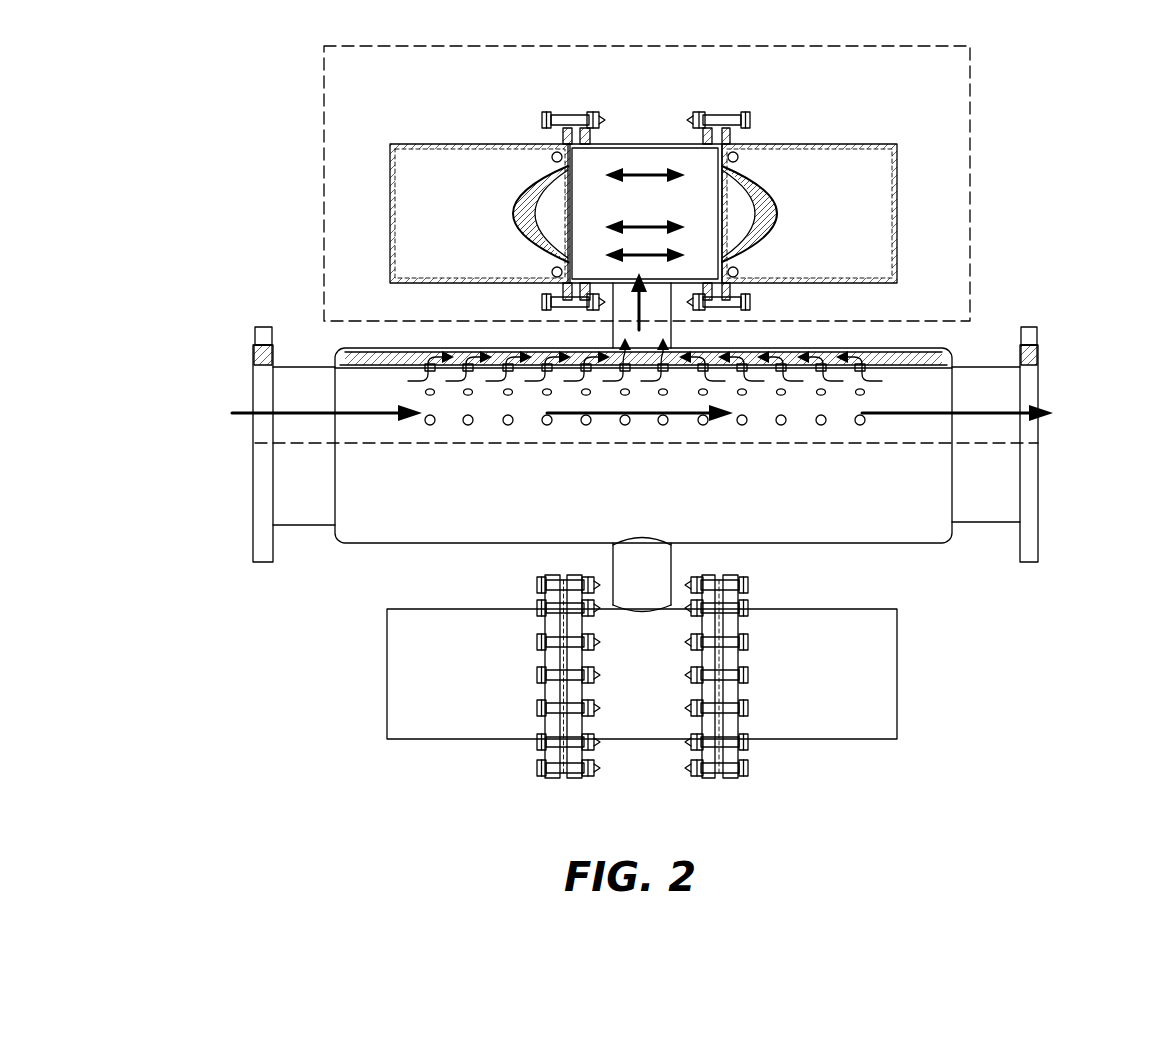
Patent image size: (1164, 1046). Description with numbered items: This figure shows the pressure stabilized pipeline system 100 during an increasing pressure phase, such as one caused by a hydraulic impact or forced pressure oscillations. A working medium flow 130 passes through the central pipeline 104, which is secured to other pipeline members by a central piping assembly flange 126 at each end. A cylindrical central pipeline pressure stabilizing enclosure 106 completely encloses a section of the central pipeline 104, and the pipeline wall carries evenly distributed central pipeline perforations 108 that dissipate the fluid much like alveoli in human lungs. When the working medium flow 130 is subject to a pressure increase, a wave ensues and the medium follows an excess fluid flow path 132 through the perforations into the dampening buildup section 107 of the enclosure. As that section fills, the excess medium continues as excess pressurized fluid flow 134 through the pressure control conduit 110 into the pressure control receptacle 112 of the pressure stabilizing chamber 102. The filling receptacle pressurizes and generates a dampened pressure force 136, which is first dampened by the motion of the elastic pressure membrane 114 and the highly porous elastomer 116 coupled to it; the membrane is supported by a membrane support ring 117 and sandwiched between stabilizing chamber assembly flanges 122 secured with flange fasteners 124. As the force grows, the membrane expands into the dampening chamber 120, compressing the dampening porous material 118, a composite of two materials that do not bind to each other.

The pressure stabilized pipeline system 100 is at (953, 632).
The pressure stabilizing chamber 102 is at (972, 200).
The central pipeline 104 is at (313, 510).
The cylindrical central pipeline pressure stabilizing enclosure 106 is at (440, 525).
The dampening buildup section 107 is at (345, 355).
The central pipeline perforations 108 is at (505, 396).
The pressure control conduit 110 is at (671, 312).
The pressure control receptacle 112 is at (665, 158).
The elastic pressure membrane 114 is at (538, 212).
The highly porous elastomer 116 is at (755, 220).
The membrane support ring 117 is at (740, 275).
The dampening porous material 118 is at (430, 165).
The dampening chamber 120 is at (505, 146).
The stabilizing chamber assembly flange 122 is at (560, 112).
The flange fastener 124 is at (748, 112).
The central piping assembly flange 126 is at (263, 482).
The working medium flow 130 is at (345, 440).
The excess fluid flow path 132 is at (400, 357).
The excess pressurized fluid flow 134 is at (632, 302).
The dampened pressure force 136 is at (645, 170).